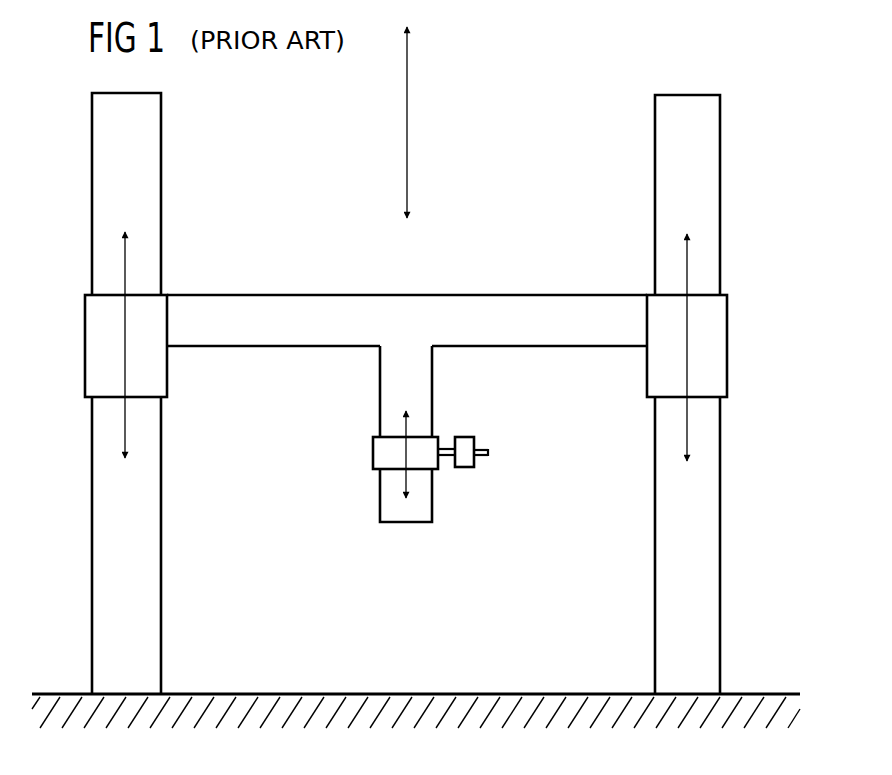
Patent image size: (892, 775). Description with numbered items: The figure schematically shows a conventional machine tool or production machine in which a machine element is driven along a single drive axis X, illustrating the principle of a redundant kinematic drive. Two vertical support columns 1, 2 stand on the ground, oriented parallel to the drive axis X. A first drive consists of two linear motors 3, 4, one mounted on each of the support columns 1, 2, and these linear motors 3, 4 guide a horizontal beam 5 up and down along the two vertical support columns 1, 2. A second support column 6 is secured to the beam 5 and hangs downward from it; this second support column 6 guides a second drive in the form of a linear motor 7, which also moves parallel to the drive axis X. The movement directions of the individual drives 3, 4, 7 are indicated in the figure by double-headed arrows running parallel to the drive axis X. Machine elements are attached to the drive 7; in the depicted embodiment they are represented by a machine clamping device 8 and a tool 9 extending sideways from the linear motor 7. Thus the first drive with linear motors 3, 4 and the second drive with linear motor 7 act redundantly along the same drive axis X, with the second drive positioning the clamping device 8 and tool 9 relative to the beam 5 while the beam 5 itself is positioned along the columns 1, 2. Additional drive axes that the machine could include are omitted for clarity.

The vertical support column 1 is at (161, 157).
The vertical support column 2 is at (655, 160).
The linear motor 3 is at (85, 346).
The linear motor 4 is at (727, 348).
The beam 5 is at (329, 303).
The second support column 6 is at (432, 392).
The linear motor 7 is at (373, 453).
The machine clamping device 8 is at (465, 469).
The tool 9 is at (488, 453).
The drive axis X is at (407, 127).